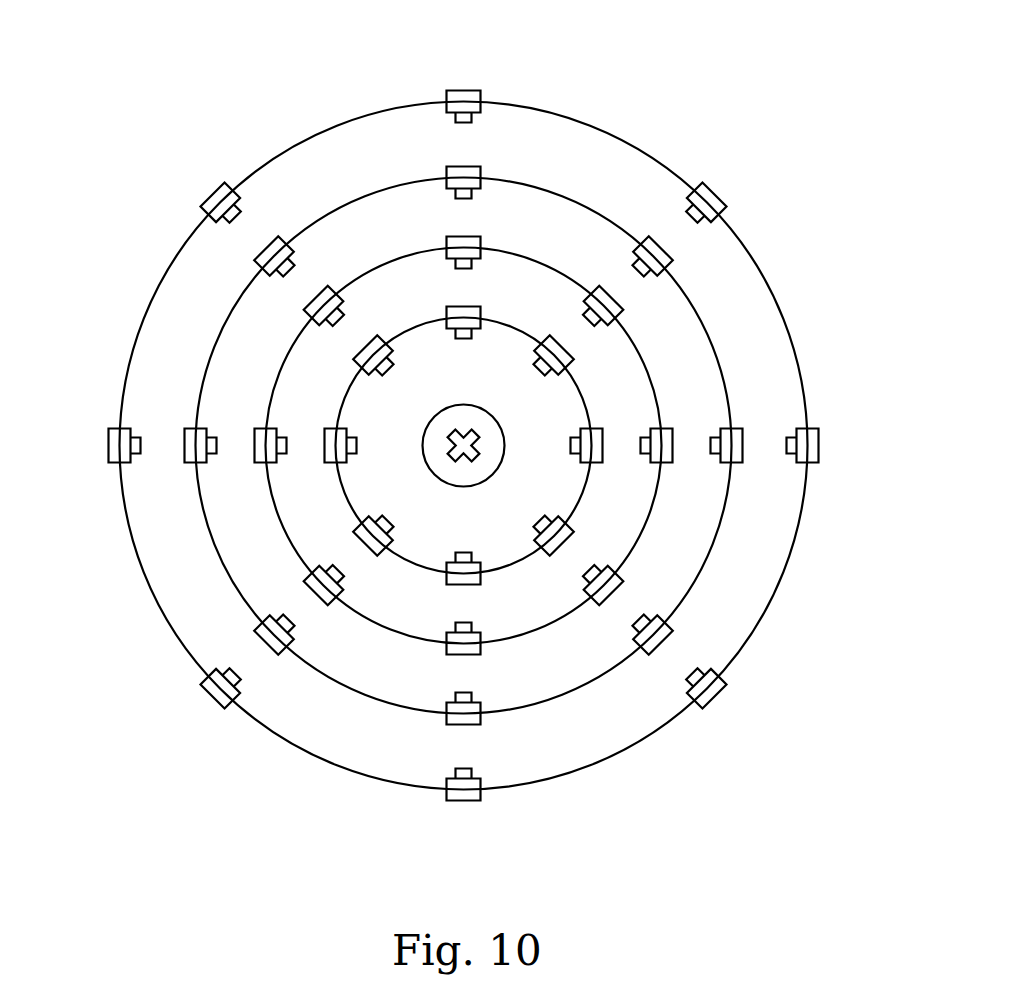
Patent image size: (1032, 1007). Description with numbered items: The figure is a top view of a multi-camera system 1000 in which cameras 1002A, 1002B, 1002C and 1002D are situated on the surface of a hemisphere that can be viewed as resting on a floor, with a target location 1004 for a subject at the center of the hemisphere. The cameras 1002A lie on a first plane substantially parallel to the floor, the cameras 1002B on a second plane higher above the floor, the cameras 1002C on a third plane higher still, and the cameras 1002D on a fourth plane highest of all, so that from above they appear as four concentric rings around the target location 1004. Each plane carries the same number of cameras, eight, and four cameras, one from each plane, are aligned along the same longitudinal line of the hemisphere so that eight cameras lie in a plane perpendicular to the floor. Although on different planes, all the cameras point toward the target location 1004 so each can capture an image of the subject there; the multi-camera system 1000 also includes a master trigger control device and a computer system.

The multi-camera system 1000 is at (471, 429).
The cameras 1002A is at (474, 88).
The cameras 1002B is at (474, 167).
The cameras 1002C is at (458, 237).
The cameras 1002D is at (464, 308).
The target location 1004 is at (461, 432).